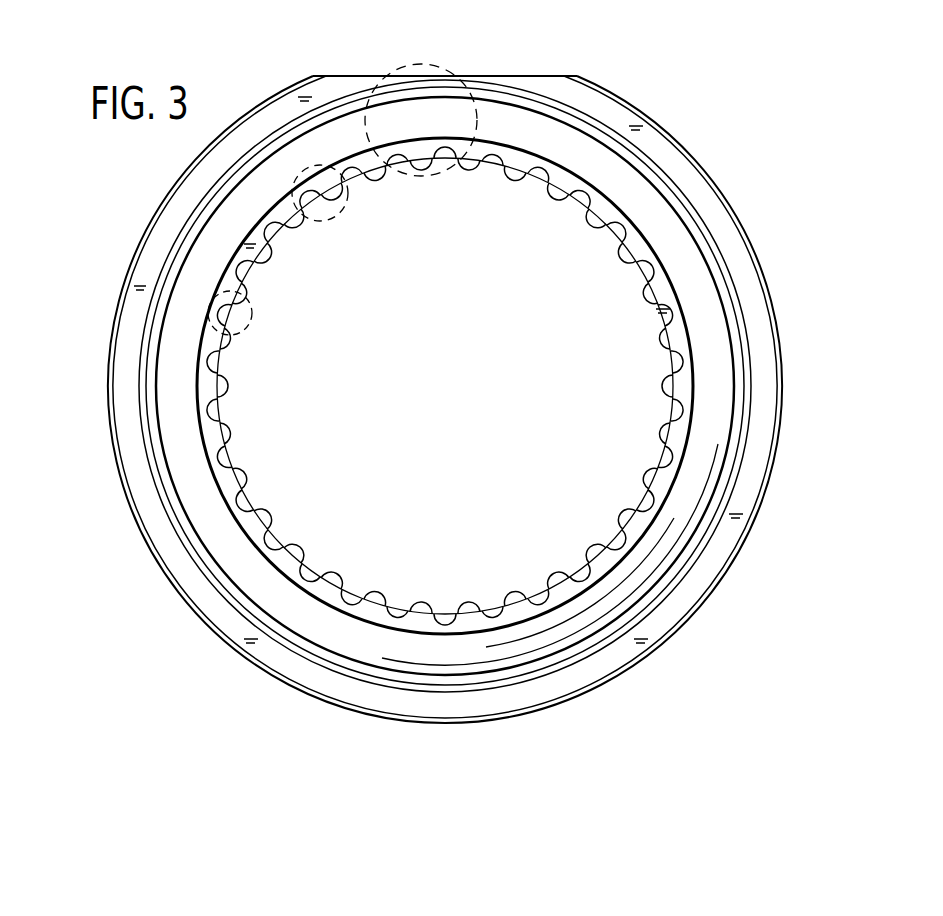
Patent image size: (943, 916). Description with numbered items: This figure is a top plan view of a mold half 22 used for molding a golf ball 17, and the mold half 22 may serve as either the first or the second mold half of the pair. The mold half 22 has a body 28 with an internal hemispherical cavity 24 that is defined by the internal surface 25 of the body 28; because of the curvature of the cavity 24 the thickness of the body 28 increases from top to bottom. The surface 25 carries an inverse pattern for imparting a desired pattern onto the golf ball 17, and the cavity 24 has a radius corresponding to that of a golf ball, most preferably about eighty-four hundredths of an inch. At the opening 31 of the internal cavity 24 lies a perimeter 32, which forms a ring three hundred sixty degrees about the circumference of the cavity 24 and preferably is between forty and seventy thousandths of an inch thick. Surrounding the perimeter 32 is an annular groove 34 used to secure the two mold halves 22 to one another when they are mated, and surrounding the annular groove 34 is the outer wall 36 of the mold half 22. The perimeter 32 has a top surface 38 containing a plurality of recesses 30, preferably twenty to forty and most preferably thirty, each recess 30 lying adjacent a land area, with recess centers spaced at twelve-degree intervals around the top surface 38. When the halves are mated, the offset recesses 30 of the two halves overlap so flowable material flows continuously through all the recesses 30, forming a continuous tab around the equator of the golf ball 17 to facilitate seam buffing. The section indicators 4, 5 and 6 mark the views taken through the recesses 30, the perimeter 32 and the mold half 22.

The golf ball 17 is at (453, 383).
The mold half 22 is at (725, 134).
The internal hemispherical cavity 24 is at (298, 272).
The internal surface 25 is at (325, 543).
The body 28 is at (262, 673).
The recesses 30 is at (690, 355).
The opening 31 is at (632, 463).
The perimeter 32 is at (665, 285).
The annular groove 34 is at (662, 553).
The outer wall 36 is at (227, 603).
The top surface 38 is at (322, 598).
The section line 4- 4 is at (380, 58).
The section line 5- 5 is at (335, 212).
The section line 6- 6 is at (418, 18).